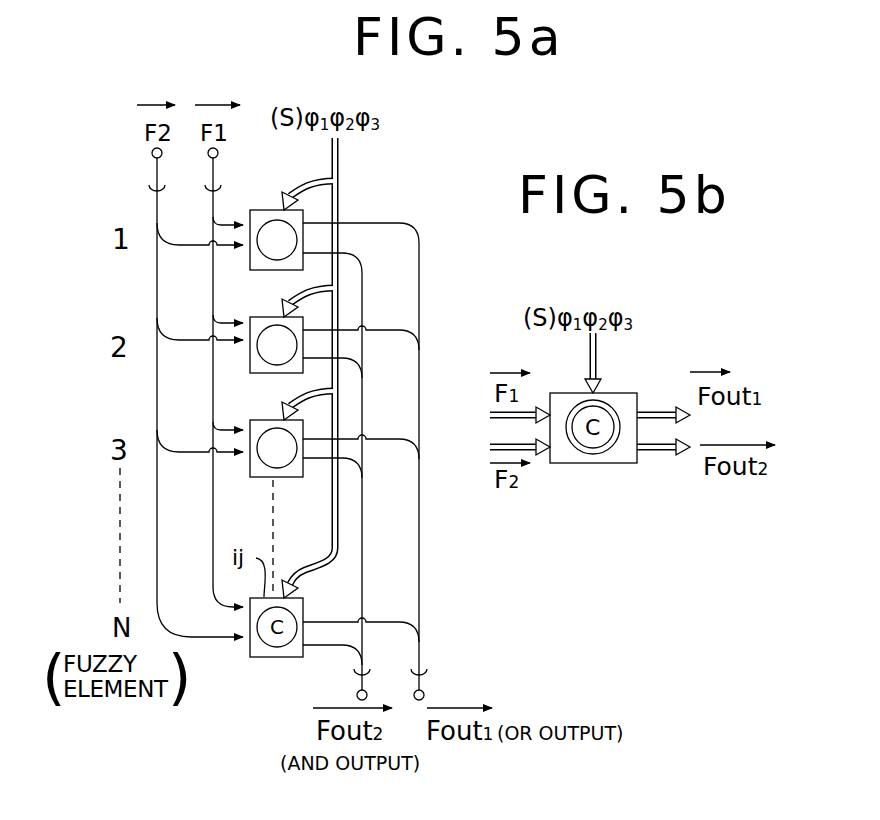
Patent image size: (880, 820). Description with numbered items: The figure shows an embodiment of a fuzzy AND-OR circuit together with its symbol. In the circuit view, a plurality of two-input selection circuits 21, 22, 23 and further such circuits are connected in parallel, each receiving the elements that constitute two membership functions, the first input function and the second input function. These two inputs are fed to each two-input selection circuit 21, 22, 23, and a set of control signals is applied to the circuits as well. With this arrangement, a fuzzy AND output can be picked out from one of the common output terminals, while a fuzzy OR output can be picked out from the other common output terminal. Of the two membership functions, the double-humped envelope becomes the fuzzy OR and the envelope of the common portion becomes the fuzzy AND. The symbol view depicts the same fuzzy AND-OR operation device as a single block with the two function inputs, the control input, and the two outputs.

The two-input selection circuit 21 is at (264, 210).
The two-input selection circuit 22 is at (264, 317).
The two-input selection circuit 23 is at (264, 420).